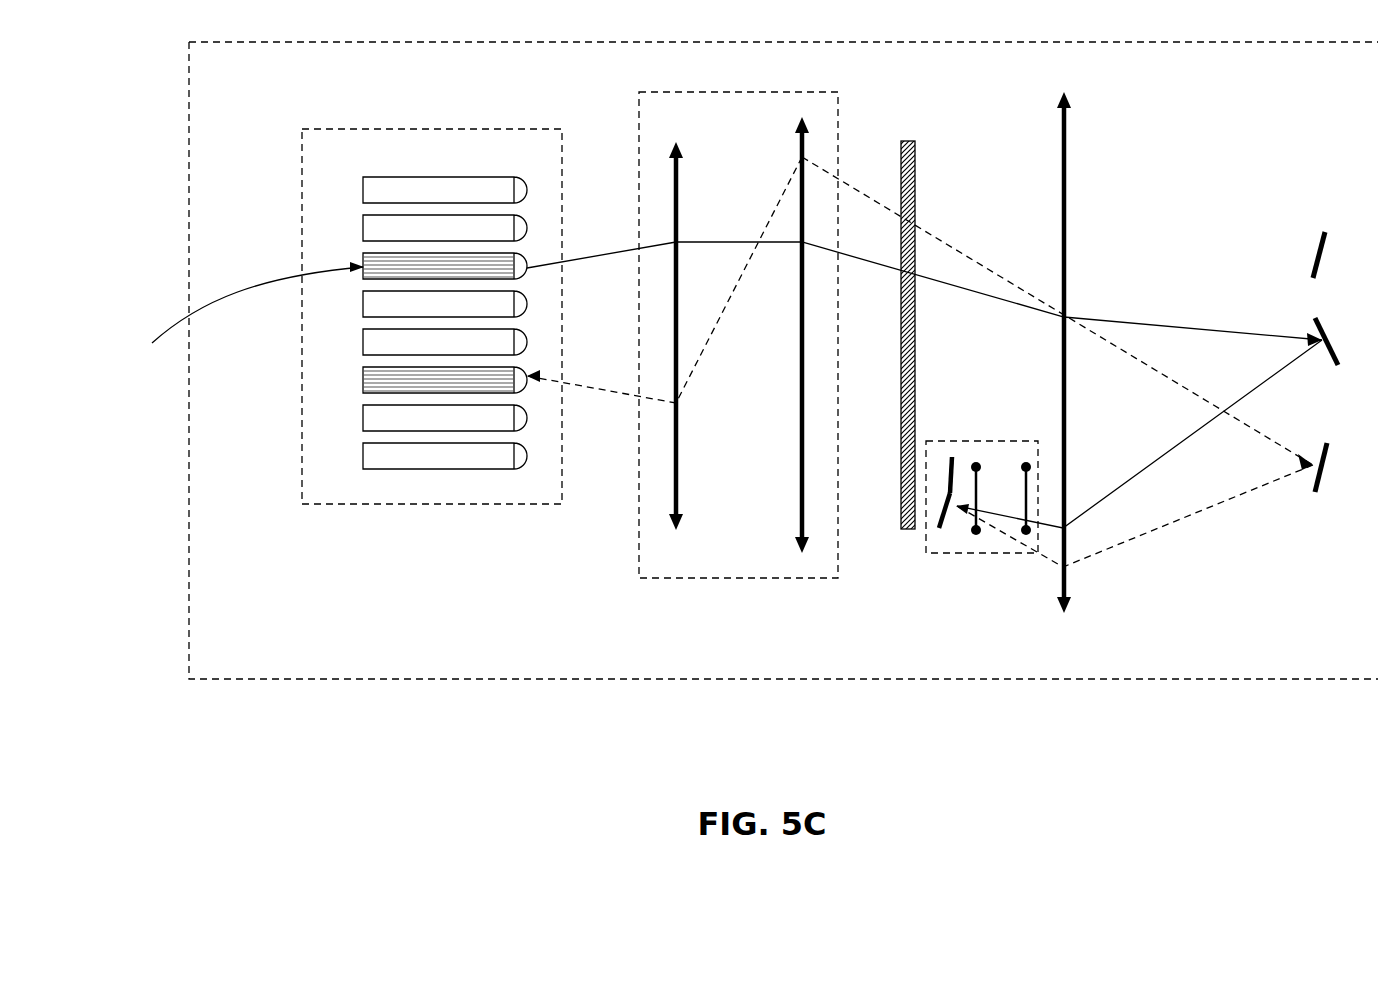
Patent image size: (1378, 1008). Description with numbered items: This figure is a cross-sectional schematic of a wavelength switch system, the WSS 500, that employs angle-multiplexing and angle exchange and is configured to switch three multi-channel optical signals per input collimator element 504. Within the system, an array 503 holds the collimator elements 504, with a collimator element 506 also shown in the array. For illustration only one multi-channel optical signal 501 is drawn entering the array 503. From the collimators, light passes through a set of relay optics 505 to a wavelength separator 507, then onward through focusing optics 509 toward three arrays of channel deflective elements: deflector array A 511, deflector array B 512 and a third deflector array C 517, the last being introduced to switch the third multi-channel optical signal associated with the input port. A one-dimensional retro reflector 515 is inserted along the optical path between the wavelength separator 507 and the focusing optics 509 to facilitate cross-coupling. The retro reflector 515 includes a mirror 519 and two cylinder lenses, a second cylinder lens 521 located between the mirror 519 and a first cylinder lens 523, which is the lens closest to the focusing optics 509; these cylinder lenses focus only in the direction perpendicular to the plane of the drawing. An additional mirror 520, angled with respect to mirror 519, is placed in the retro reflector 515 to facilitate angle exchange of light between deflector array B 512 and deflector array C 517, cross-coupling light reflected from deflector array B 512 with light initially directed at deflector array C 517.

The wavelength switch system 500 is at (313, 681).
The multi-channel optical signal 501 is at (237, 282).
The array of collimator elements 503 is at (430, 505).
The collimator element 504 is at (364, 256).
The relay optics 505 is at (740, 580).
The output fiber port 506 is at (365, 369).
The wavelength separator 507 is at (905, 532).
The focusing optics 509 is at (1066, 614).
The deflector array A 511 is at (1327, 230).
The deflector array B 512 is at (1338, 368).
The one-dimensional retro reflector 515 is at (1026, 442).
The deflector array C 517 is at (1317, 496).
The mirror 519 is at (950, 456).
The additional mirror 520 is at (940, 530).
The second cylinder lens 521 is at (976, 464).
The first cylinder lens 523 is at (1026, 534).